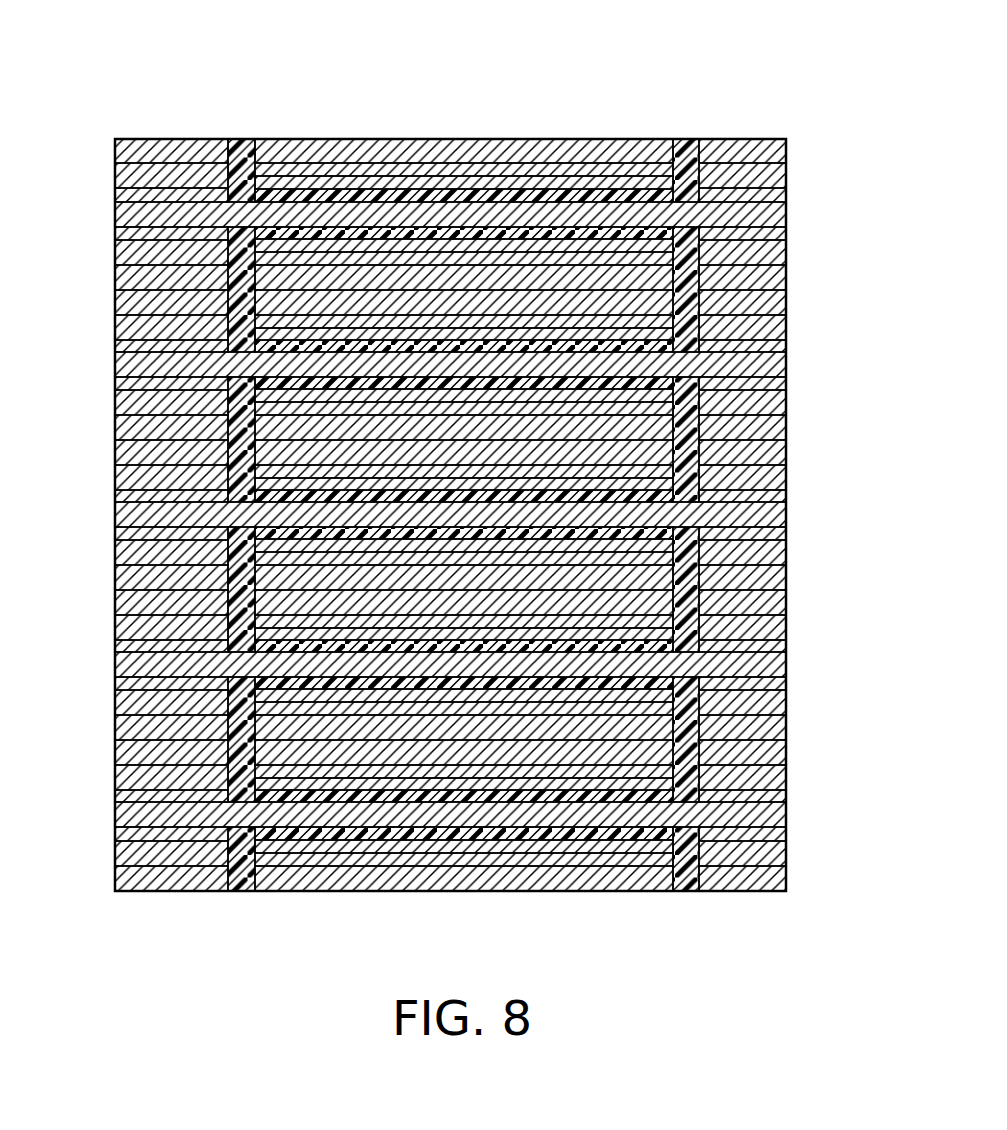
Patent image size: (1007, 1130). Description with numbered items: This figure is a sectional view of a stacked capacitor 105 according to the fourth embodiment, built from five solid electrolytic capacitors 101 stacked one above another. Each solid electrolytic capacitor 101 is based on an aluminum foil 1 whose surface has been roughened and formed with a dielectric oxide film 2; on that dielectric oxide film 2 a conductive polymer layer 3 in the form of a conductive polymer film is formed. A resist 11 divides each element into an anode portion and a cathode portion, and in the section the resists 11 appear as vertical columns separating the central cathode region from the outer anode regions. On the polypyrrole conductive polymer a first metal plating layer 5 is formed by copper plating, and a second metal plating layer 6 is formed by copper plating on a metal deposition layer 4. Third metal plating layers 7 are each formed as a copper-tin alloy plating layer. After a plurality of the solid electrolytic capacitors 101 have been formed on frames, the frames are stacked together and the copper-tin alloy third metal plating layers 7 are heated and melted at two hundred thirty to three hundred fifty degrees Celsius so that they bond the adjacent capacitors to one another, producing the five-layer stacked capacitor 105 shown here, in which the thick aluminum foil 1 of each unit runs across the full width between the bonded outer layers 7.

The stacked capacitor 105 is at (572, 100).
The aluminum foil 1 is at (115, 215).
The dielectric oxide film 2 is at (315, 197).
The conductive polymer layer 3 is at (400, 187).
The metal deposition layer 4 is at (115, 187).
The first metal plating layer 5 is at (473, 168).
The second metal plating layer 6 is at (172, 162).
The third metal plating layer 7 is at (126, 139).
The resist 11 is at (245, 139).
The solid electrolytic capacitor 101 is at (787, 216).